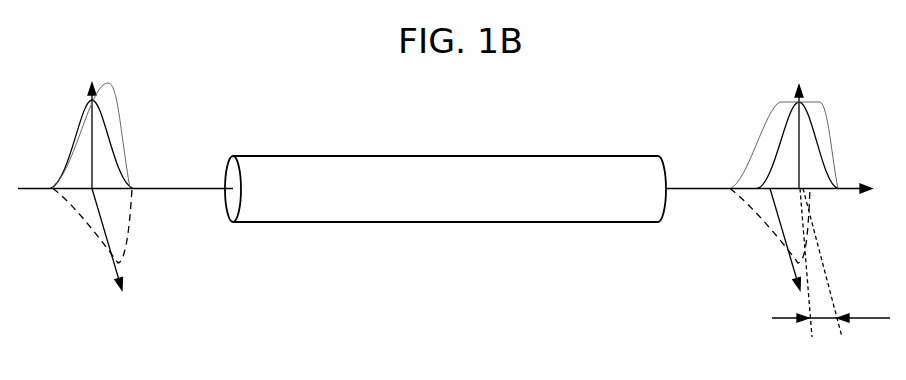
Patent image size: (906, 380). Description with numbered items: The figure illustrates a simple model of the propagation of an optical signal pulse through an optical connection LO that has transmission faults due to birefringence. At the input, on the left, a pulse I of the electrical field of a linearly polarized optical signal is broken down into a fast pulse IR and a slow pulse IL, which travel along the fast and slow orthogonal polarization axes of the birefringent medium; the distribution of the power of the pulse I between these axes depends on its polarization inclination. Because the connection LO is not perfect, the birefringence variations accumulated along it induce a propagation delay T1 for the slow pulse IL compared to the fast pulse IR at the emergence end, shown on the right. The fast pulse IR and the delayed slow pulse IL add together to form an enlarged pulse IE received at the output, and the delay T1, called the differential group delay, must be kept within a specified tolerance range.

The fast pulse IR is at (68, 128).
The pulse I is at (122, 115).
The enlarged pulse IE is at (827, 118).
The slow pulse IL is at (85, 233).
The optical connection LO is at (449, 156).
The propagation delay T1 is at (831, 263).